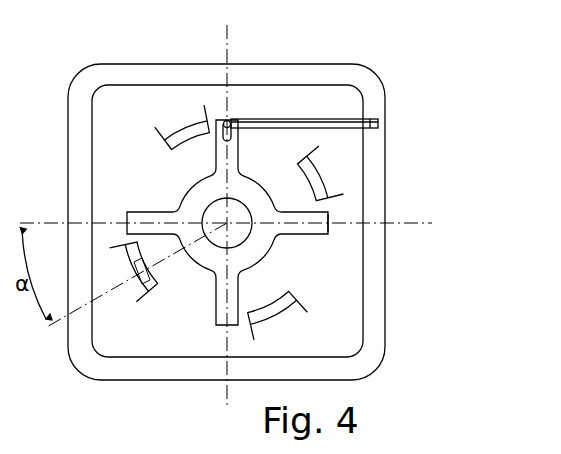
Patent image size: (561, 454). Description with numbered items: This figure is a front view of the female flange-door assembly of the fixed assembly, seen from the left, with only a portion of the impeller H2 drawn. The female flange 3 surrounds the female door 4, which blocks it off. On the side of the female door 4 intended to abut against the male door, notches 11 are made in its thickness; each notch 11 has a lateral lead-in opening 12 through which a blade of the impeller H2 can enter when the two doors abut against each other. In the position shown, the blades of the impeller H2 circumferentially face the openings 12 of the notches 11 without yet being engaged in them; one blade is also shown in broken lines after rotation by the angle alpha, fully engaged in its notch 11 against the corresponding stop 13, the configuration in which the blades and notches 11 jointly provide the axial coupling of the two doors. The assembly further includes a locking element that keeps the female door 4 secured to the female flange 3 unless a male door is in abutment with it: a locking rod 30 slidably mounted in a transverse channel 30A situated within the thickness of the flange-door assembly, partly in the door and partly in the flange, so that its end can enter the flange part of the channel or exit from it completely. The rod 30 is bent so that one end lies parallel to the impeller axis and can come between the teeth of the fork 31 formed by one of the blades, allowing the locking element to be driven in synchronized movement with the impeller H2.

The female flange 3 is at (125, 69).
The female door 4 is at (113, 109).
The notches 11 is at (313, 178).
The lateral lead-in openings 12 is at (322, 209).
The stop 13 is at (151, 297).
The locking rod 30 is at (293, 118).
The transverse channel 30A is at (372, 118).
The fork 31 is at (220, 119).
The impeller H2 is at (298, 224).